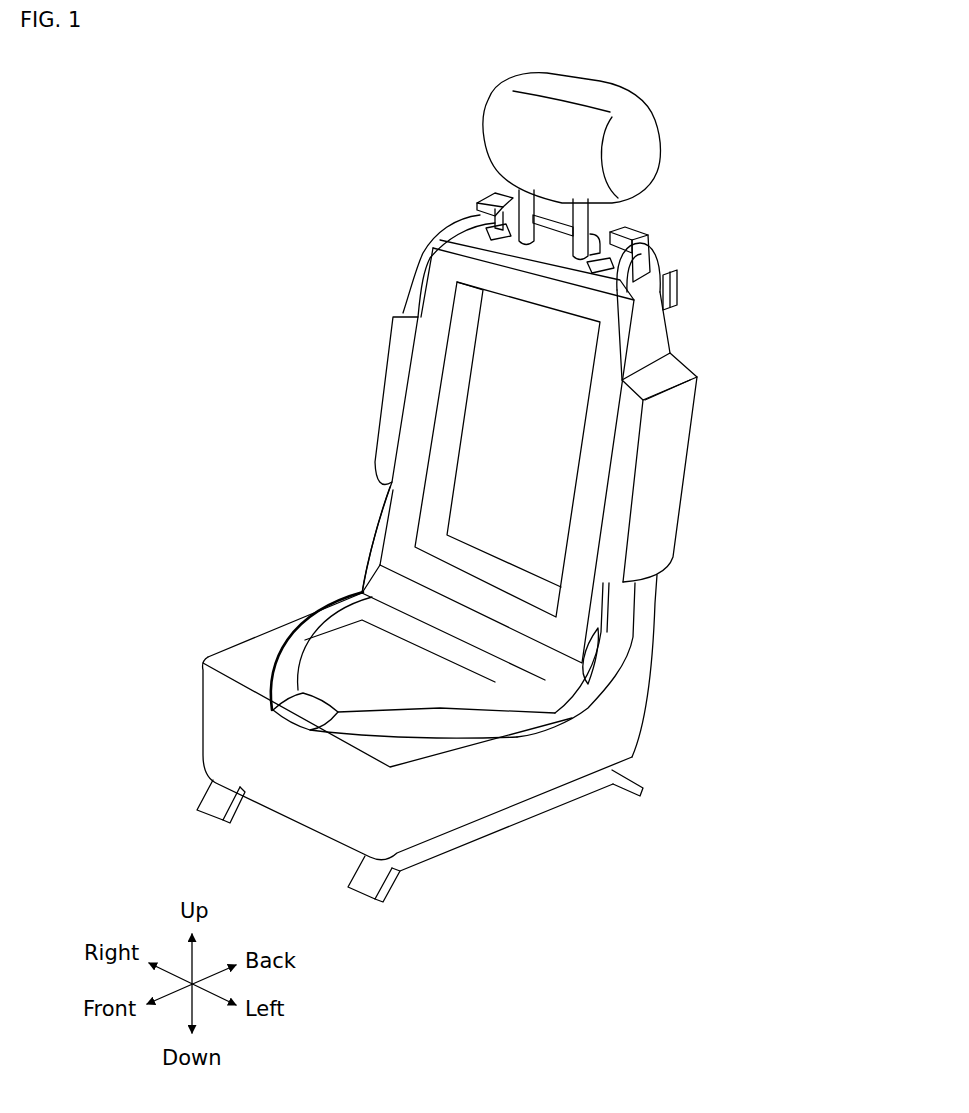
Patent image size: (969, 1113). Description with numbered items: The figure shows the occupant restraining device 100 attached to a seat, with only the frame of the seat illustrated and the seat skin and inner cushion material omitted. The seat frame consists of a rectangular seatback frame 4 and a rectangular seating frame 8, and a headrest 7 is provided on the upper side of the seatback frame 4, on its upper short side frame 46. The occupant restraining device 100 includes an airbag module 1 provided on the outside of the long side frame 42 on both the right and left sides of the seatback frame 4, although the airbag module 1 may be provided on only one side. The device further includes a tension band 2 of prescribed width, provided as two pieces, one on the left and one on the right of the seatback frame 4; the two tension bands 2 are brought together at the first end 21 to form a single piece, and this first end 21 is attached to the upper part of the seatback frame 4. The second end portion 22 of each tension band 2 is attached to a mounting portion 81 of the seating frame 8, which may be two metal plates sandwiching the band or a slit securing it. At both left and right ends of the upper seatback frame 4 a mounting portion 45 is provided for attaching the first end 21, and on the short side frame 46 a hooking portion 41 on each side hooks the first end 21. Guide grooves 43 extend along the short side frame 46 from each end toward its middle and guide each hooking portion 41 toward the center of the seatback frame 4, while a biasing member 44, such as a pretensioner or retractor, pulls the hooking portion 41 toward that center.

The occupant restraining device 100 is at (742, 150).
The airbag module 1 is at (385, 436).
The tension band 2 is at (690, 344).
The first end 21 is at (650, 340).
The second end portion 22 is at (520, 713).
The seatback frame 4 is at (405, 246).
The hooking portion 41 is at (493, 195).
The long side frame 42 is at (402, 517).
The guide groove 43 is at (492, 244).
The biasing member 44 is at (540, 246).
The mounting portion 45 is at (670, 276).
The upper short side frame 46 is at (433, 250).
The headrest 7 is at (517, 74).
The seating frame 8 is at (252, 622).
The mounting portion 81 is at (300, 712).